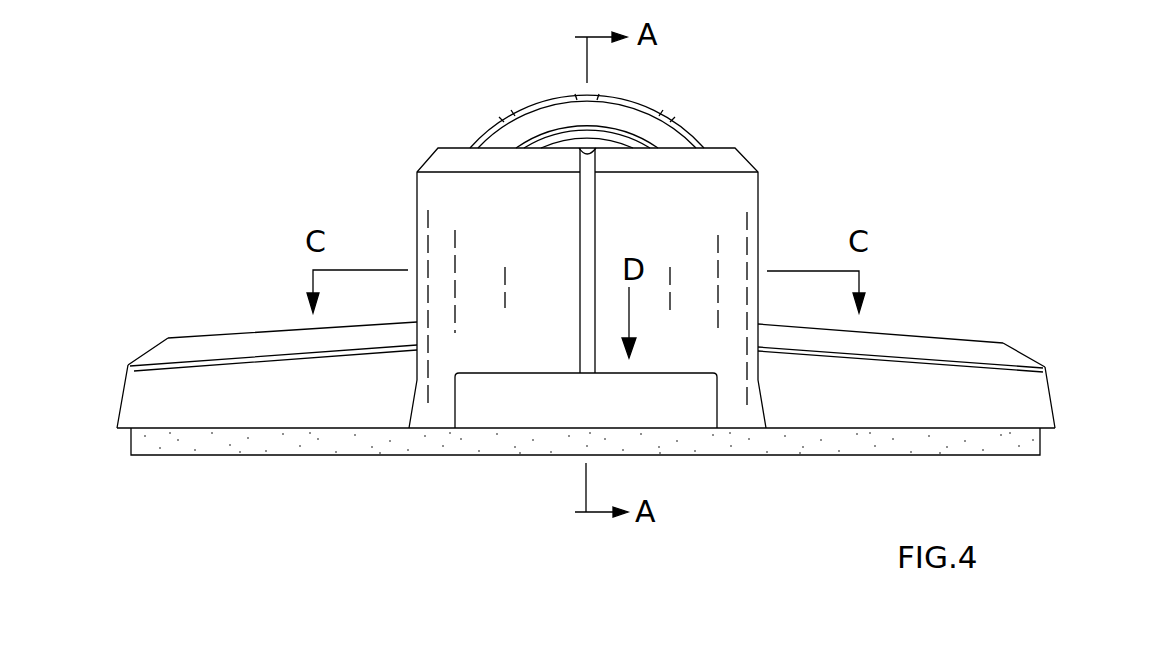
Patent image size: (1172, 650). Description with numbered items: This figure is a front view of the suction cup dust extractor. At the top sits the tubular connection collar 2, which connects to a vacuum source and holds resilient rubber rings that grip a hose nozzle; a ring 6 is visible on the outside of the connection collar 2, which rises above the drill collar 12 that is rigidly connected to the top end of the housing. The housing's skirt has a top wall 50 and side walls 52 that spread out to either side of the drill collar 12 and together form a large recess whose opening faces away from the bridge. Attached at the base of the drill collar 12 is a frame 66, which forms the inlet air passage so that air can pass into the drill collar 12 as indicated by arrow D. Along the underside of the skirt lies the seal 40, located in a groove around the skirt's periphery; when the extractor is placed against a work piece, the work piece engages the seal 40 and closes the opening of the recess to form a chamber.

The tubular connection collar 2 is at (553, 125).
The bezel ring 6 is at (679, 128).
The drill collar 12 is at (542, 249).
The top wall 50 is at (257, 342).
The side walls 52 is at (122, 383).
The seal 40 is at (150, 440).
The frame 66 is at (535, 402).